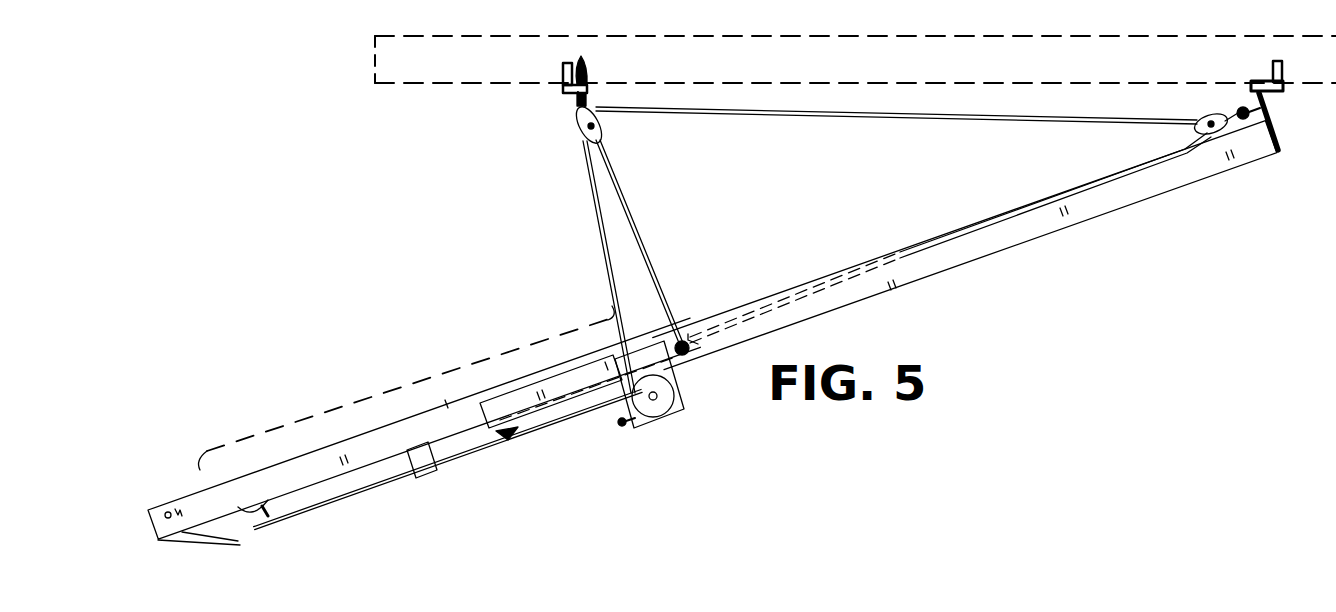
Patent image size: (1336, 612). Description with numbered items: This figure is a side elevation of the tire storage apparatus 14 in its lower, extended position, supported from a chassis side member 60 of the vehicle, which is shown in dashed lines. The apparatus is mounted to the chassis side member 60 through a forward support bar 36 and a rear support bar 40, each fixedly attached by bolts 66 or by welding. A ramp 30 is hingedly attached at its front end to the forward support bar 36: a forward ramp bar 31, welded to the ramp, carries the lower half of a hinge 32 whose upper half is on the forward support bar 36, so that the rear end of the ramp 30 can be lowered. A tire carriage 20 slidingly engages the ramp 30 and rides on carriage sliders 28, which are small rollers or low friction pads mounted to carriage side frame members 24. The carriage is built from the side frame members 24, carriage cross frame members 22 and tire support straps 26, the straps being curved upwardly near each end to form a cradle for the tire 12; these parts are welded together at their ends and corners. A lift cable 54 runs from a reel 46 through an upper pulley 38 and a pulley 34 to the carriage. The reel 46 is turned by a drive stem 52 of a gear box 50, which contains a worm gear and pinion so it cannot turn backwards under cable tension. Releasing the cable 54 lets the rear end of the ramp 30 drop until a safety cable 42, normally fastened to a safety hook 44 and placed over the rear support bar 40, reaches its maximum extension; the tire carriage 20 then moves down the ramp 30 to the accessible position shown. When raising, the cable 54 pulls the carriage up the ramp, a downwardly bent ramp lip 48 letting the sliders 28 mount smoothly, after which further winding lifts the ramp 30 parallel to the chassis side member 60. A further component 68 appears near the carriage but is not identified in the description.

The tire 12 is at (396, 380).
The tire storage apparatus 14 is at (500, 313).
The tire carriage 20 is at (170, 492).
The carriage cross frame members 22 is at (688, 338).
The carriage side frame members 24 is at (292, 460).
The tire support straps 26 is at (420, 480).
The carriage sliders 28 is at (268, 516).
The ramp 30 is at (990, 244).
The forward ramp bar 31 is at (1280, 146).
The hinge 32 is at (1252, 113).
The pulley 34 is at (1193, 125).
The forward support bar 36 is at (1252, 84).
The upper pulley 38 is at (603, 128).
The rear support bar 40 is at (589, 80).
The safety cable 42 is at (630, 216).
The safety hook 44 is at (166, 511).
The reel 46 is at (662, 410).
The ramp lip 48 is at (506, 436).
The gear box 50 is at (680, 398).
The drive stem 52 is at (624, 428).
The lift cable 54 is at (900, 113).
The chassis side member 60 is at (448, 86).
The bolts 66 is at (573, 95).
The pin 68 is at (694, 352).